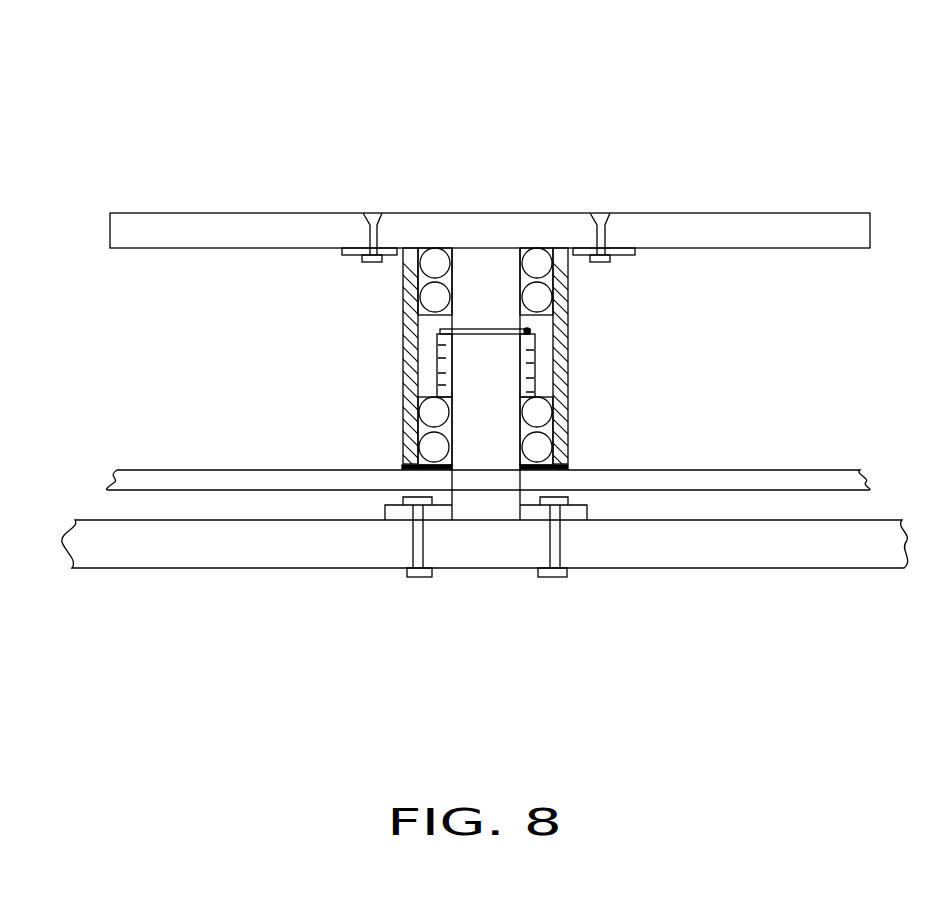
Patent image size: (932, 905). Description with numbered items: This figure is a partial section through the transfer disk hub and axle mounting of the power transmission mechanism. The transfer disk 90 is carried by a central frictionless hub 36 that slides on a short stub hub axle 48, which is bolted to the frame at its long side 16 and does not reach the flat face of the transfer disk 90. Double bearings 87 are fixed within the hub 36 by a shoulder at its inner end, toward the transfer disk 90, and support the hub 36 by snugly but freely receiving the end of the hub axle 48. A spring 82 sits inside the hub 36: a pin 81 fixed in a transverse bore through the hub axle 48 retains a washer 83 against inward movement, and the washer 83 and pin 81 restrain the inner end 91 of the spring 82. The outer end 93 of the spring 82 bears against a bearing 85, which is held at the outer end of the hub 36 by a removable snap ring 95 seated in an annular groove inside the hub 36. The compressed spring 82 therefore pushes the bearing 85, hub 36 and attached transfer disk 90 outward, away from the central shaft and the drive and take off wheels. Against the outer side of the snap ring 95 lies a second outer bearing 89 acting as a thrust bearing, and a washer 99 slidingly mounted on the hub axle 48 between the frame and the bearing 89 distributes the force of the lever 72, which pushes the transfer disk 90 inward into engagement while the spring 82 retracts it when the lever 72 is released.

The transfer disk 90 is at (222, 222).
The hub 36 is at (407, 310).
The double bearings 87 is at (435, 280).
The hub axle 48 is at (492, 282).
The pin 81 is at (494, 322).
The washer 83 is at (528, 330).
The inner end of spring 91 is at (530, 330).
The long side of framework 16 is at (162, 568).
The spring 82 is at (417, 392).
The bearing 85 is at (414, 442).
The outer bearing 89 is at (433, 452).
The washer 99 is at (519, 502).
The outer end of spring 93 is at (540, 450).
The snap ring 95 is at (525, 410).
The lever 72 is at (795, 483).